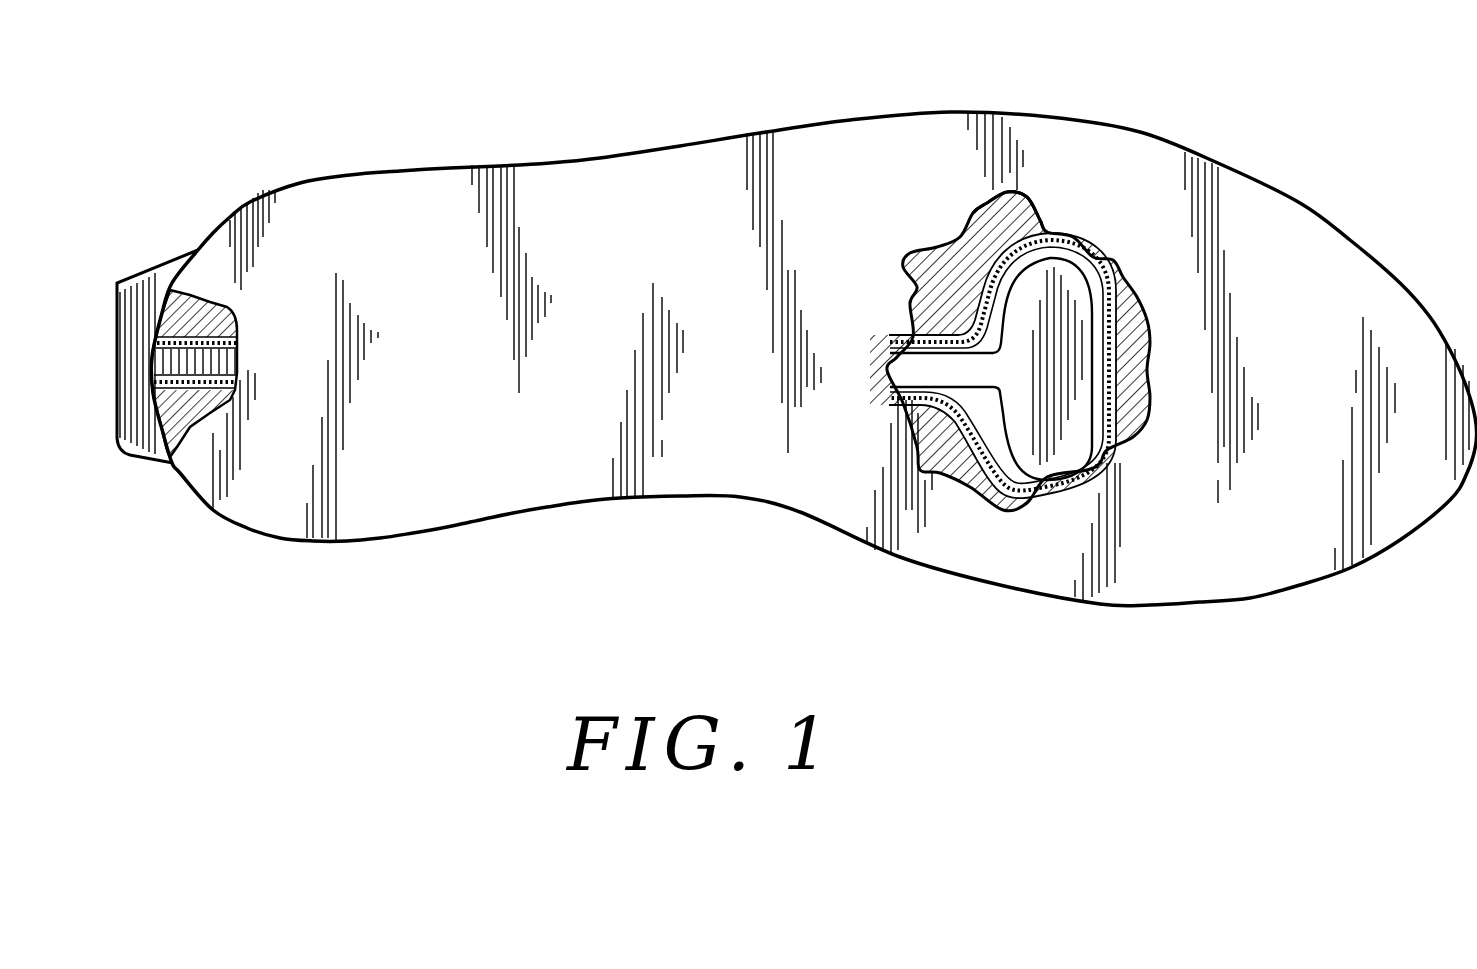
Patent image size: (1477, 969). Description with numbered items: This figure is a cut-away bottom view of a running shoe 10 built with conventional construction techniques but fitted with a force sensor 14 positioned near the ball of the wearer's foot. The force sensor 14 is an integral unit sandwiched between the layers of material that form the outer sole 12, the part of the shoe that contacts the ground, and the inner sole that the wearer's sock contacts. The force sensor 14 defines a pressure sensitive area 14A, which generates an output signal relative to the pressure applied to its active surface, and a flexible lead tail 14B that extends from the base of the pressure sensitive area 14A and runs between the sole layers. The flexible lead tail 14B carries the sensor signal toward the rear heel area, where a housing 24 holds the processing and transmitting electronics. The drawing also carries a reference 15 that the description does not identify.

The running shoe 10 is at (571, 515).
The outer sole 12 is at (770, 480).
The force sensor 14 is at (1069, 305).
The pressure sensitive area 14A is at (1053, 450).
The flexible lead tail 14B is at (217, 367).
The ramp portion of receptacle 15 is at (1003, 243).
The housing 24 is at (161, 283).